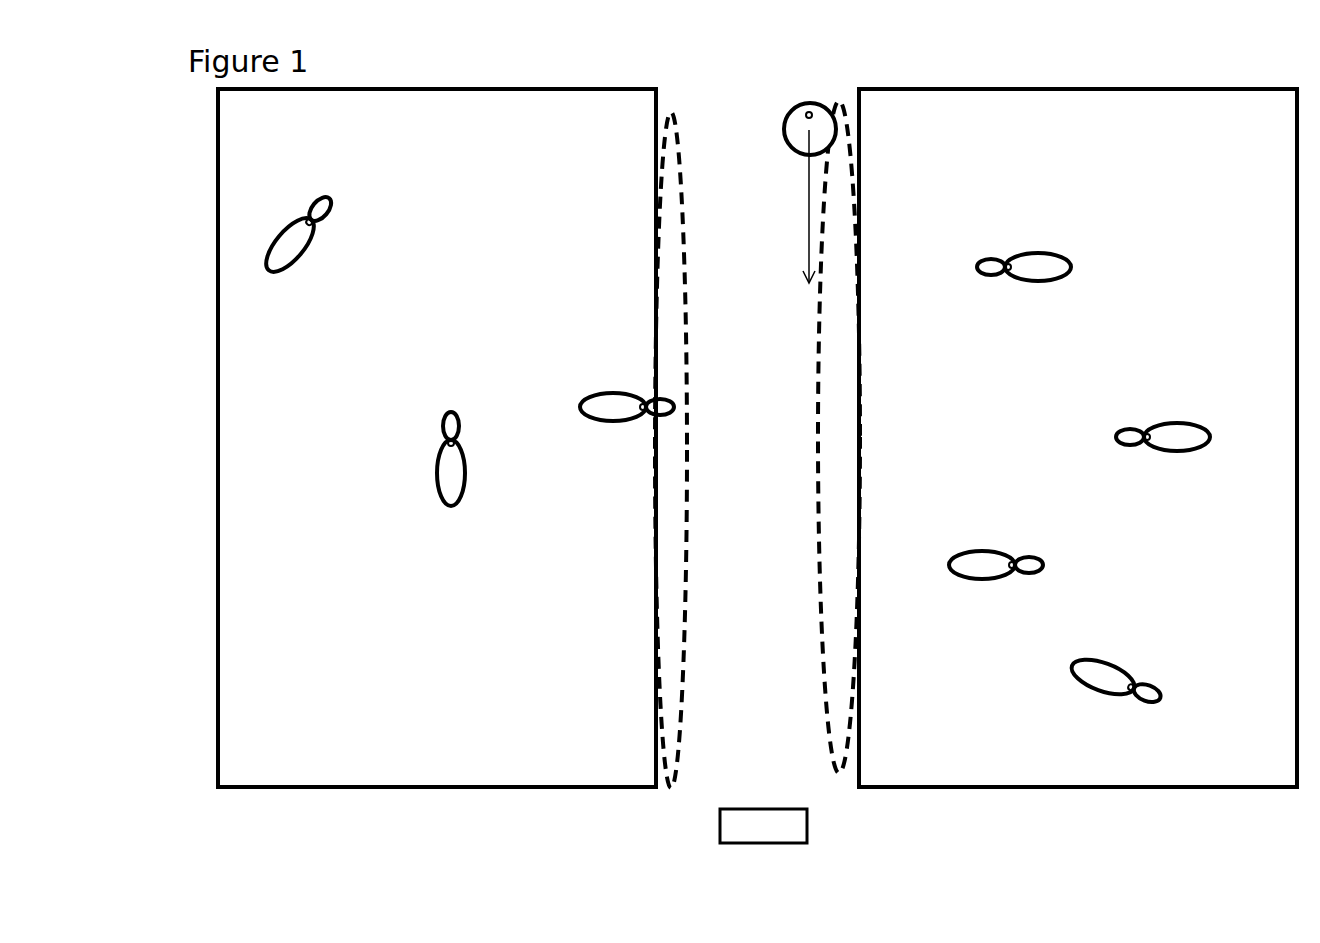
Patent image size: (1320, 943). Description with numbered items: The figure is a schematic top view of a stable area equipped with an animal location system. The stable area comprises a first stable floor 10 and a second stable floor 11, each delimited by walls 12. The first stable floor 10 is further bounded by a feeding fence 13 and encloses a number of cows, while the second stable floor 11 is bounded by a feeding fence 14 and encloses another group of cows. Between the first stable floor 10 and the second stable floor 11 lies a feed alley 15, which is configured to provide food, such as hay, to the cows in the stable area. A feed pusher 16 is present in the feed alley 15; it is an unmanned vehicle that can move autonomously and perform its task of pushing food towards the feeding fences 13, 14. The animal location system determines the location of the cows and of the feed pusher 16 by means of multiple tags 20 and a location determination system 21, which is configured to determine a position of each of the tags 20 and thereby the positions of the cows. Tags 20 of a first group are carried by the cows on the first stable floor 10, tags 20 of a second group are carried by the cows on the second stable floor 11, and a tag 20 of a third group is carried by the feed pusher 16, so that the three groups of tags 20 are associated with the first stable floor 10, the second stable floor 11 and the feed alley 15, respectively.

The first stable floor 10 is at (437, 438).
The second stable floor 11 is at (1078, 438).
The walls 12 is at (594, 86).
The feeding fence 13 is at (660, 702).
The feeding fence 14 is at (855, 632).
The feed alley 15 is at (755, 390).
The feed pusher 16 is at (792, 108).
The tags 20 is at (447, 440).
The location determination system 21 is at (808, 826).